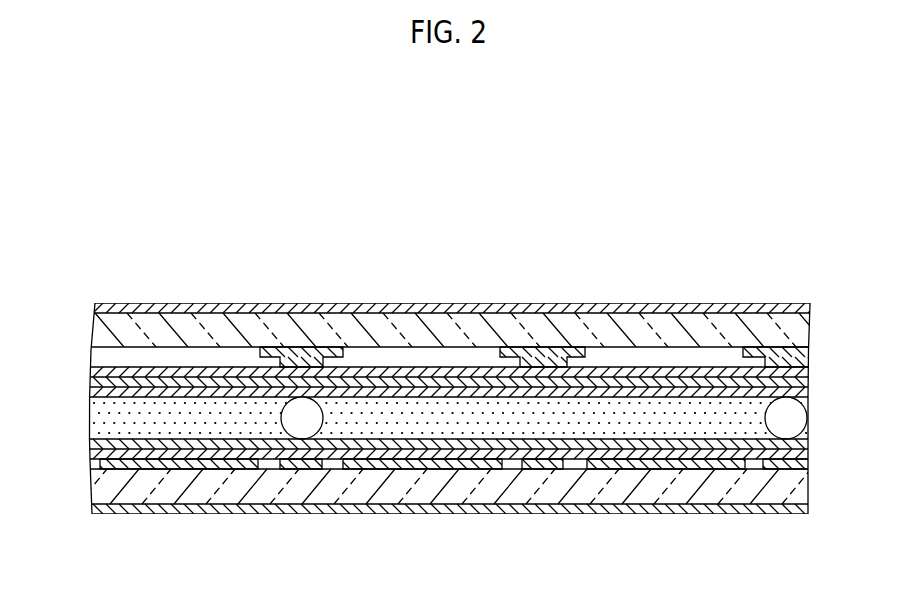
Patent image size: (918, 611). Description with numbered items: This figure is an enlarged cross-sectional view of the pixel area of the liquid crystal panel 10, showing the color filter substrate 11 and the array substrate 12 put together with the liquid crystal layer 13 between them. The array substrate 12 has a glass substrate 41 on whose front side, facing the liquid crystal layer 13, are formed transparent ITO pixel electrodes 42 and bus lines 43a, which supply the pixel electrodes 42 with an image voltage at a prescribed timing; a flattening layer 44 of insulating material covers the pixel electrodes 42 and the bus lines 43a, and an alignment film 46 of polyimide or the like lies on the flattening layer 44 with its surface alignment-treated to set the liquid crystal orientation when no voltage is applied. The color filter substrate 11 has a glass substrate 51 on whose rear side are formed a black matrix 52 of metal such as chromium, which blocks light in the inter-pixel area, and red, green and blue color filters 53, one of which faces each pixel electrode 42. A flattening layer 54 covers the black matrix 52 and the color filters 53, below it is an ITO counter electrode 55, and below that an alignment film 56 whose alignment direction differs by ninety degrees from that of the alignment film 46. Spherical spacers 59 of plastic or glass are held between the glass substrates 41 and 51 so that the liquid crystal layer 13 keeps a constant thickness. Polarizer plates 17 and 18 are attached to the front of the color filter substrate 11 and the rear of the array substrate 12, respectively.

The liquid crystal panel 10 is at (353, 210).
The color filter substrate 11 is at (90, 313).
The array substrate 12 is at (90, 440).
The liquid crystal layer 13 is at (108, 417).
The polarizer plate 17 is at (462, 306).
The polarizer plate 18 is at (467, 515).
The glass substrate 41 is at (702, 503).
The pixel electrode 42 is at (161, 468).
The bus line 43a is at (310, 468).
The flattening layer 44 is at (806, 453).
The alignment film 46 is at (806, 445).
The glass substrate 51 is at (710, 322).
The black matrix 52 is at (301, 347).
The color filter 53 is at (160, 355).
The flattening layer 54 is at (802, 371).
The counter electrode 55 is at (802, 382).
The alignment film 56 is at (802, 392).
The spacer 59 is at (293, 427).